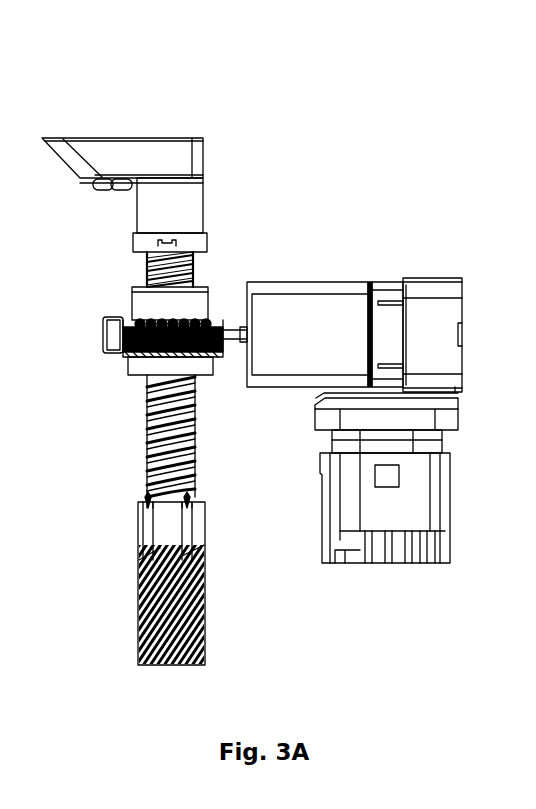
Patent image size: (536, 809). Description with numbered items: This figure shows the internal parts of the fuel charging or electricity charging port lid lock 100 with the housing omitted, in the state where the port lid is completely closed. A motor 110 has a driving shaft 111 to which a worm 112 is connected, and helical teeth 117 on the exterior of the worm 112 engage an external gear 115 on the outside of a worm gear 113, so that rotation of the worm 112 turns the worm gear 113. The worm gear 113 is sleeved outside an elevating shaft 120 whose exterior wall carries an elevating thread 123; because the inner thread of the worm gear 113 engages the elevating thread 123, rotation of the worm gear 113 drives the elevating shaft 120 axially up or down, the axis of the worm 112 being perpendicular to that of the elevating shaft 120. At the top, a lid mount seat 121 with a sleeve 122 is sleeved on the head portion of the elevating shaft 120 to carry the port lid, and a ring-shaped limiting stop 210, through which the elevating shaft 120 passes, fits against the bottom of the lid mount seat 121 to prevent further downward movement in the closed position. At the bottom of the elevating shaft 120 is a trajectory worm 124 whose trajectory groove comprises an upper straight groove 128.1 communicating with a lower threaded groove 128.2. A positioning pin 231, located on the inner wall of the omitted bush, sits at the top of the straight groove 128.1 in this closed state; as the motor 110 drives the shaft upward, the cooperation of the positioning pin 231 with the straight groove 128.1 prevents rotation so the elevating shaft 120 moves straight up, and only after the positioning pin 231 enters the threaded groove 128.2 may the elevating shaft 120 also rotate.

The fuel charging or electricity charging port lid lock 100 is at (380, 118).
The motor 110 is at (445, 310).
The driving shaft 111 is at (240, 330).
The worm 112 is at (158, 312).
The worm gear 113 is at (148, 310).
The external gear 115 is at (130, 362).
The helical teeth 117 is at (112, 337).
The elevating shaft 120 is at (147, 423).
The lid mount seat 121 is at (180, 150).
The sleeve 122 is at (188, 223).
The elevating thread 123 is at (147, 463).
The trajectory worm 124 is at (158, 531).
The straight groove 128.1 is at (192, 527).
The threaded groove 128.2 is at (205, 620).
The limiting stop 210 is at (133, 244).
The positioning pin 231 is at (188, 497).